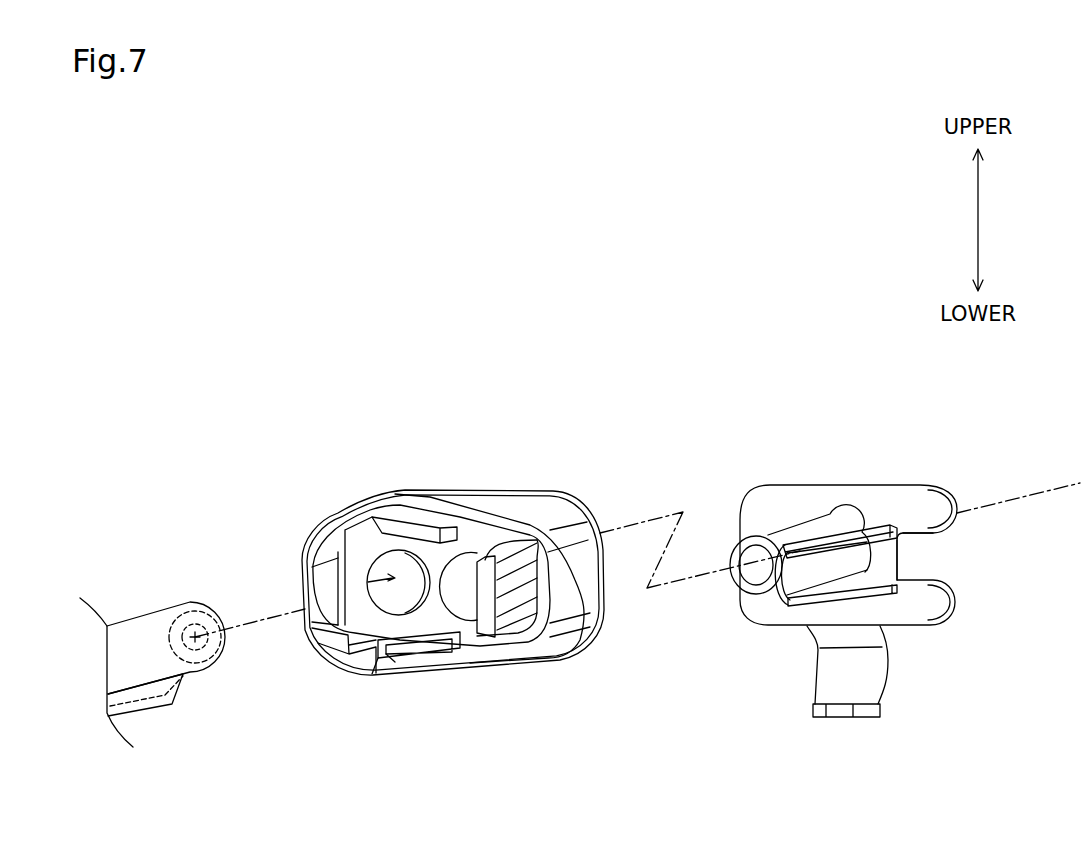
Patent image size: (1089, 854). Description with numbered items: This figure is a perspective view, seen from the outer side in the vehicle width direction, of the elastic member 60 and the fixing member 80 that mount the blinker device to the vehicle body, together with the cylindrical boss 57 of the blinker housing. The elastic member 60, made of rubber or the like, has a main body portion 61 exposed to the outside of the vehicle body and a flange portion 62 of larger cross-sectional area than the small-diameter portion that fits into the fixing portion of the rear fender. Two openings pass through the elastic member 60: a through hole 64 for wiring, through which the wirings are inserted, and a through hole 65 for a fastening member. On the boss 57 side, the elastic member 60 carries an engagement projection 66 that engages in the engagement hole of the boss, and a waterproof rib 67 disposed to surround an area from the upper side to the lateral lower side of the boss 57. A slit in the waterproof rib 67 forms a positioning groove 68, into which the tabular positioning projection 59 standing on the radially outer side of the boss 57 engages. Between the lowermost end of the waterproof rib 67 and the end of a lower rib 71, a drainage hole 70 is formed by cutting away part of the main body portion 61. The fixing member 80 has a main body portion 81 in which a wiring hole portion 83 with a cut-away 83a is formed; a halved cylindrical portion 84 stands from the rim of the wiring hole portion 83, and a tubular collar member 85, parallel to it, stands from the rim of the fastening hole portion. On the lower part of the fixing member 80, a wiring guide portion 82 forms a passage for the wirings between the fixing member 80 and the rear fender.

The cylindrical boss 57 is at (130, 630).
The positioning projection 59 is at (178, 690).
The elastic member 60 is at (453, 548).
The main body portion 61 is at (497, 513).
The flange portion 62 is at (555, 510).
The through hole for wiring 64 is at (448, 570).
The through hole for fastening member 65 is at (369, 575).
The engagement projection 66 is at (487, 607).
The waterproof rib 67 is at (417, 525).
The positioning groove 68 is at (327, 650).
The drainage hole 70 is at (394, 681).
The lower rib 71 is at (428, 660).
The fixing member 80 is at (899, 526).
The main body portion 81 is at (930, 510).
The wiring guide portion 82 is at (877, 683).
The wiring hole portion 83 is at (911, 566).
The cut-away 83a is at (922, 551).
The halved cylindrical portion 84 is at (868, 525).
The tubular collar member 85 is at (806, 530).